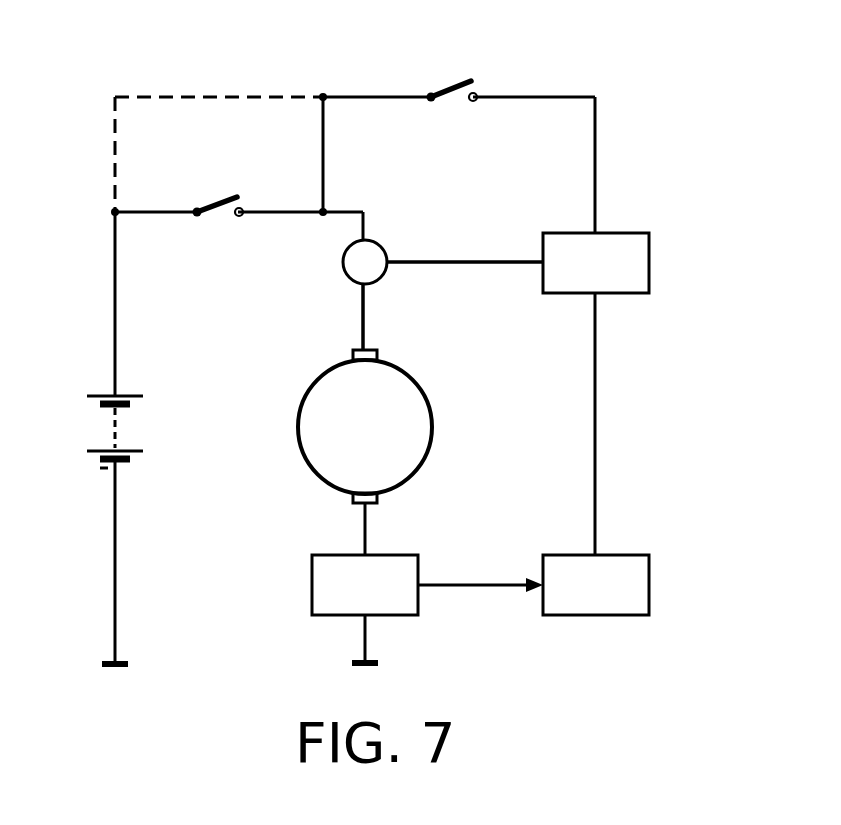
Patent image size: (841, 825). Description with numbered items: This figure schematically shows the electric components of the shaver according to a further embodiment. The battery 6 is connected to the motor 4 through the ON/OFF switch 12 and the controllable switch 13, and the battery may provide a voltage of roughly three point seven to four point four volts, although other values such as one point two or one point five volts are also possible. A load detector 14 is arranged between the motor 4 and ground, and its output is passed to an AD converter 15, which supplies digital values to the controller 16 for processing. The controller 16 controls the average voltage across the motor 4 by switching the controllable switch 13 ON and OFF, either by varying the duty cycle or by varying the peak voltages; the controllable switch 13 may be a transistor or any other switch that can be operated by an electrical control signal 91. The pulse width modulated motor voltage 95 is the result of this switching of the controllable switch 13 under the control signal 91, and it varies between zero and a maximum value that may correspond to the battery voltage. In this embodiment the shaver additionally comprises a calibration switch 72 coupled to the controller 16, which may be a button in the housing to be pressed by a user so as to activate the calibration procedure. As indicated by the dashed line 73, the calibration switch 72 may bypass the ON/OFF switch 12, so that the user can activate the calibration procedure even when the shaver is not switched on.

The dashed line 73 is at (206, 97).
The ON/OFF switch 12 is at (219, 192).
The calibration switch 72 is at (452, 77).
The controllable switch 13 is at (384, 246).
The control signal 91 is at (494, 260).
The pulse width modulated motor voltage 95 is at (362, 317).
The motor 4 is at (432, 427).
The controller 16 is at (649, 262).
The AD converter 15 is at (649, 585).
The load detector 14 is at (311, 585).
The battery 6 is at (103, 428).